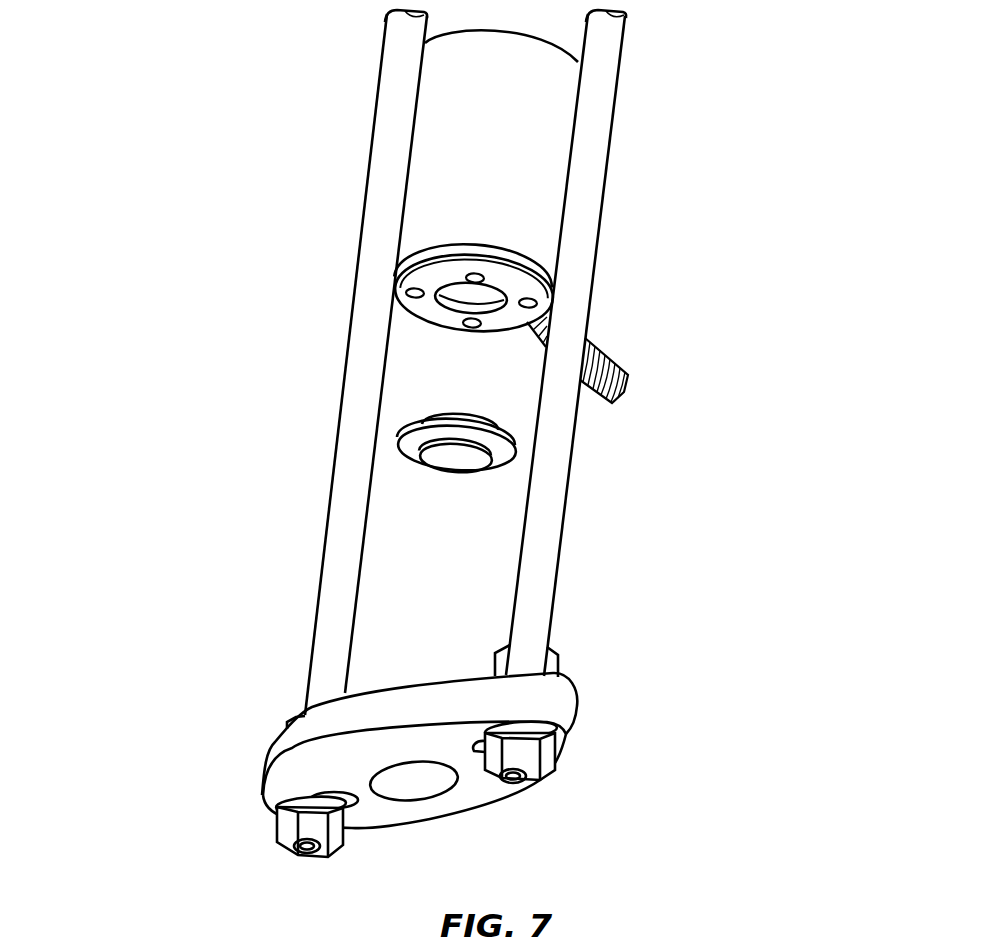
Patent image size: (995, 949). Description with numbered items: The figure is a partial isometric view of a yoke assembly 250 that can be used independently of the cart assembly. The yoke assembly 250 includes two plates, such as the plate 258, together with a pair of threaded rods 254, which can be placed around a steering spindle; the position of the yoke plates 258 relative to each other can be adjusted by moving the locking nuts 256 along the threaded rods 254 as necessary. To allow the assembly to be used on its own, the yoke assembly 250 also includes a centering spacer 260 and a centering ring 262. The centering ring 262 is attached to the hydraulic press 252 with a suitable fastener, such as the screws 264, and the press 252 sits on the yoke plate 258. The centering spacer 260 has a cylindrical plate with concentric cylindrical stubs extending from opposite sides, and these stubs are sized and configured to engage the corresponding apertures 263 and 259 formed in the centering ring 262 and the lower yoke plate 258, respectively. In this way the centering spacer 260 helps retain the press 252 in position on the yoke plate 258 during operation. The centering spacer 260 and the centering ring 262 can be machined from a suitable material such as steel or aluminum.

The yoke assembly 250 is at (143, 356).
The hydraulic press 252 is at (537, 131).
The threaded rods 254 is at (376, 211).
The locking nuts 256 is at (555, 665).
The plate 258 is at (487, 808).
The aperture 259 is at (408, 788).
The centering spacer 260 is at (507, 447).
The centering ring 262 is at (405, 281).
The aperture 263 is at (466, 308).
The screws 264 is at (410, 296).